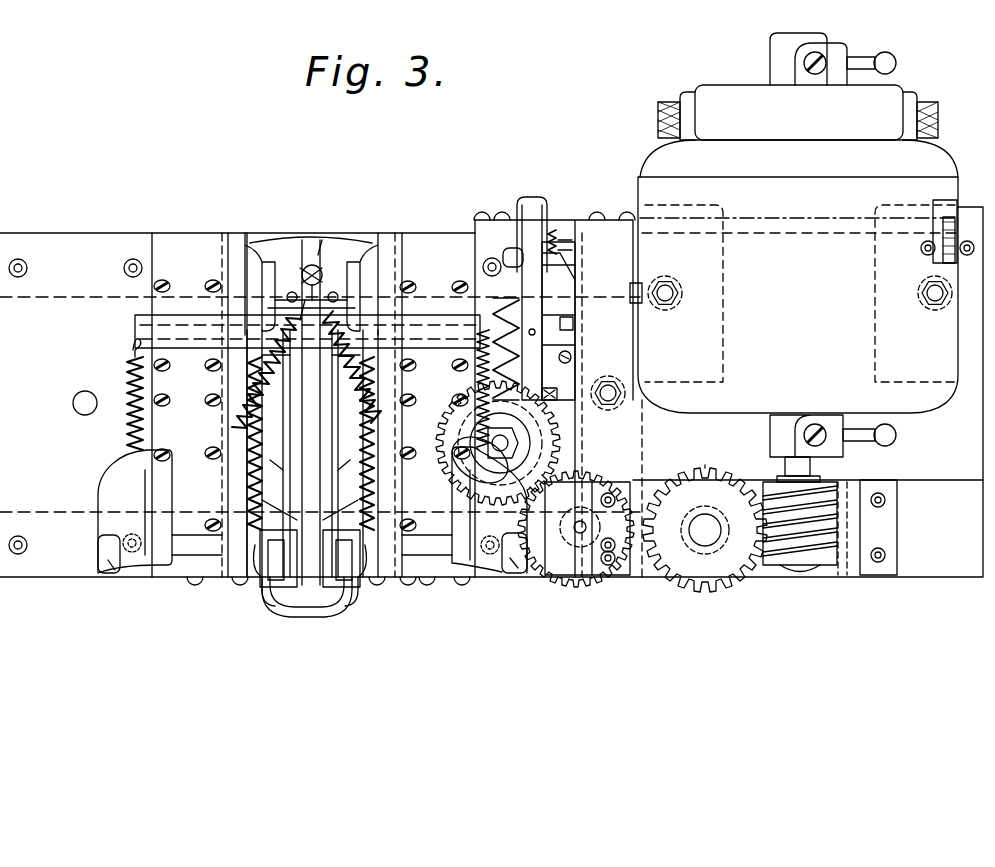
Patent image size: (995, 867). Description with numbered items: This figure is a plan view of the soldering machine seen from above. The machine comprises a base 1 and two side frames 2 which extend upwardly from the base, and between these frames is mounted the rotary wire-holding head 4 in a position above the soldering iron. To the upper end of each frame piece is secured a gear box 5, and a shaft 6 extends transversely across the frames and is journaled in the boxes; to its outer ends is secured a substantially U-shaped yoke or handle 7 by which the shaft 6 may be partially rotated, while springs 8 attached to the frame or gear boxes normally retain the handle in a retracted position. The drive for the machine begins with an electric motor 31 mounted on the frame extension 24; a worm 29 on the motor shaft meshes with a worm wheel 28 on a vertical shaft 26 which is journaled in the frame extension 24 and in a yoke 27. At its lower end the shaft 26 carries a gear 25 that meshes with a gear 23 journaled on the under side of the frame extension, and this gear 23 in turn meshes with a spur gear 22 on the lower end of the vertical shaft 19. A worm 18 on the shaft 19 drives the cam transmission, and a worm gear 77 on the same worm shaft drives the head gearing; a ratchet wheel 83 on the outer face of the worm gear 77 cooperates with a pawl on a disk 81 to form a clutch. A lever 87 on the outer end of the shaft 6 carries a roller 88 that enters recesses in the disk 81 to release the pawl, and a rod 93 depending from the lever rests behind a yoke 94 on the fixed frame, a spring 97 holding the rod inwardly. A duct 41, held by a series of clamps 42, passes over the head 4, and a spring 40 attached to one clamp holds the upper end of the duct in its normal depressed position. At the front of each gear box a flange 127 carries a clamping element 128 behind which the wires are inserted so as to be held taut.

The base 1 is at (68, 565).
The side frames 2 is at (222, 253).
The rotary wire-holding head 4 is at (327, 610).
The gear box 5 is at (133, 436).
The shaft 6 is at (425, 333).
The yoke or handle 7 is at (178, 315).
The springs 8 is at (128, 385).
The worm 18 is at (503, 485).
The vertical shaft 19 is at (576, 514).
The spur gear 22 is at (607, 388).
The gear 23 is at (597, 470).
The frame extension 24 is at (808, 504).
The gear 25 is at (710, 466).
The vertical shaft 26 is at (713, 523).
The yoke 27 is at (830, 570).
The worm wheel 28 is at (705, 530).
The worm 29 is at (830, 486).
The electric motor 31 is at (948, 412).
The spring 40 is at (233, 416).
The duct 41 is at (282, 597).
The clamps 42 is at (309, 280).
The worm gear 77 is at (510, 313).
The disk 81 is at (548, 323).
The ratchet wheel 83 is at (509, 372).
The lever 87 is at (555, 232).
The roller 88 is at (547, 388).
The rod 93 is at (517, 235).
The yoke 94 is at (535, 200).
The spring 97 is at (583, 243).
The flange 127 is at (98, 490).
The clamping element 128 is at (115, 575).